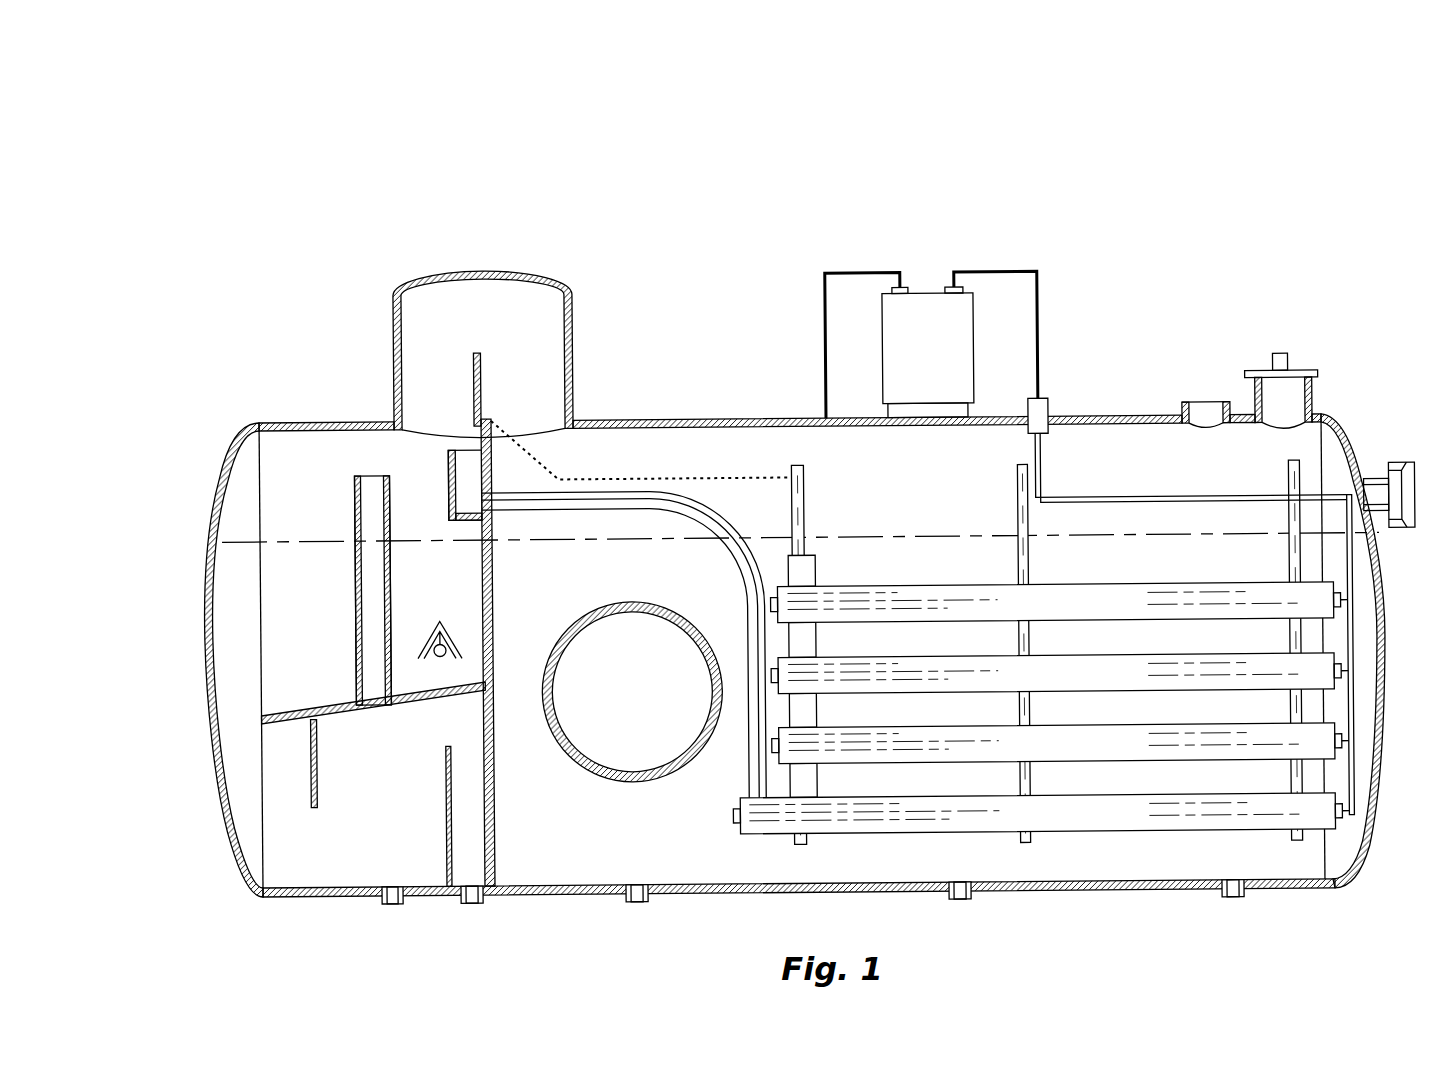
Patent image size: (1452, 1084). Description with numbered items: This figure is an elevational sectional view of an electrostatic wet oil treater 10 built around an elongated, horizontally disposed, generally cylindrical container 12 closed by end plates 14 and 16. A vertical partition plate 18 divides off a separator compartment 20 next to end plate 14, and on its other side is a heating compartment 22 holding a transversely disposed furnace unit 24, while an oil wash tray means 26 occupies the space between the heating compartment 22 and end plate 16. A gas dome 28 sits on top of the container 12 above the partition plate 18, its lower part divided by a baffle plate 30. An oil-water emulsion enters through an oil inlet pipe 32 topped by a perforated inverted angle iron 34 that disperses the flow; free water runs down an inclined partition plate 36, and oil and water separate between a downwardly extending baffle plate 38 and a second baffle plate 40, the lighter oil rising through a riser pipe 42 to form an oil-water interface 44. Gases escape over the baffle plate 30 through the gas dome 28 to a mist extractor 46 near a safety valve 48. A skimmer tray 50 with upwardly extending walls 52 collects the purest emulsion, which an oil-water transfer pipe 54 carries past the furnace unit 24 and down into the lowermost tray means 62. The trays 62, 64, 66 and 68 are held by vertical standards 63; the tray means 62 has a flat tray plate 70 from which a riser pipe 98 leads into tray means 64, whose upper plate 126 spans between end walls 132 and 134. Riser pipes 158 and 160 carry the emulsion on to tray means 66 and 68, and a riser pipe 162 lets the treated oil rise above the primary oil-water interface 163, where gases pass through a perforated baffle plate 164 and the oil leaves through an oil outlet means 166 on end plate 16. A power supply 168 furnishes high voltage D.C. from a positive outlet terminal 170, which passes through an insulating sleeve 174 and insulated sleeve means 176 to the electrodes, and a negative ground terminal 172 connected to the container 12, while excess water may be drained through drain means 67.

The electrostatic wet oil treater 10 is at (724, 395).
The container 12 is at (672, 422).
The end plate 14 is at (204, 607).
The end plate 16 is at (1386, 662).
The partition plate 18 is at (496, 818).
The separator compartment 20 is at (298, 492).
The heating compartment 22 is at (672, 802).
The furnace unit 24 is at (574, 640).
The oil wash tray means 26 is at (1116, 566).
The gas dome 28 is at (398, 296).
The baffle plate 30 is at (478, 368).
The oil inlet pipe 32 is at (444, 659).
The inverted angle iron 34 is at (446, 628).
The inclined partition plate 36 is at (338, 712).
The baffle plate 38 is at (318, 798).
The second baffle plate 40 is at (447, 835).
The riser pipe 42 is at (358, 590).
The oil-water interface 44 is at (237, 550).
The mist extractor 46 is at (1317, 400).
The safety valve 48 is at (1190, 410).
The skimmer tray 50 is at (472, 522).
The upwardly extending walls 52 is at (452, 472).
The oil-water transfer pipe 54 is at (702, 495).
The tray means 62 is at (930, 838).
The standards 63 is at (807, 497).
The tray means 64 is at (937, 768).
The tray means 66 is at (930, 698).
The drain means 67 is at (382, 904).
The tray means 68 is at (921, 627).
The tray plate 70 is at (1190, 802).
The riser pipe 98 is at (818, 792).
The upper plate 126 is at (1190, 732).
The end wall 132 is at (752, 734).
The end wall 134 is at (1343, 757).
The riser pipe 158 is at (818, 722).
The riser pipe 160 is at (818, 647).
The riser pipe 162 is at (818, 576).
The primary oil-water interface 163 is at (1250, 565).
The perforated baffle plate 164 is at (764, 482).
The oil outlet means 166 is at (1410, 537).
The power supply 168 is at (887, 332).
The positive outlet terminal 170 is at (990, 278).
The negative ground output terminal 172 is at (905, 278).
The insulating sleeve 174 is at (1052, 408).
The insulated sleeve means 176 is at (1340, 704).